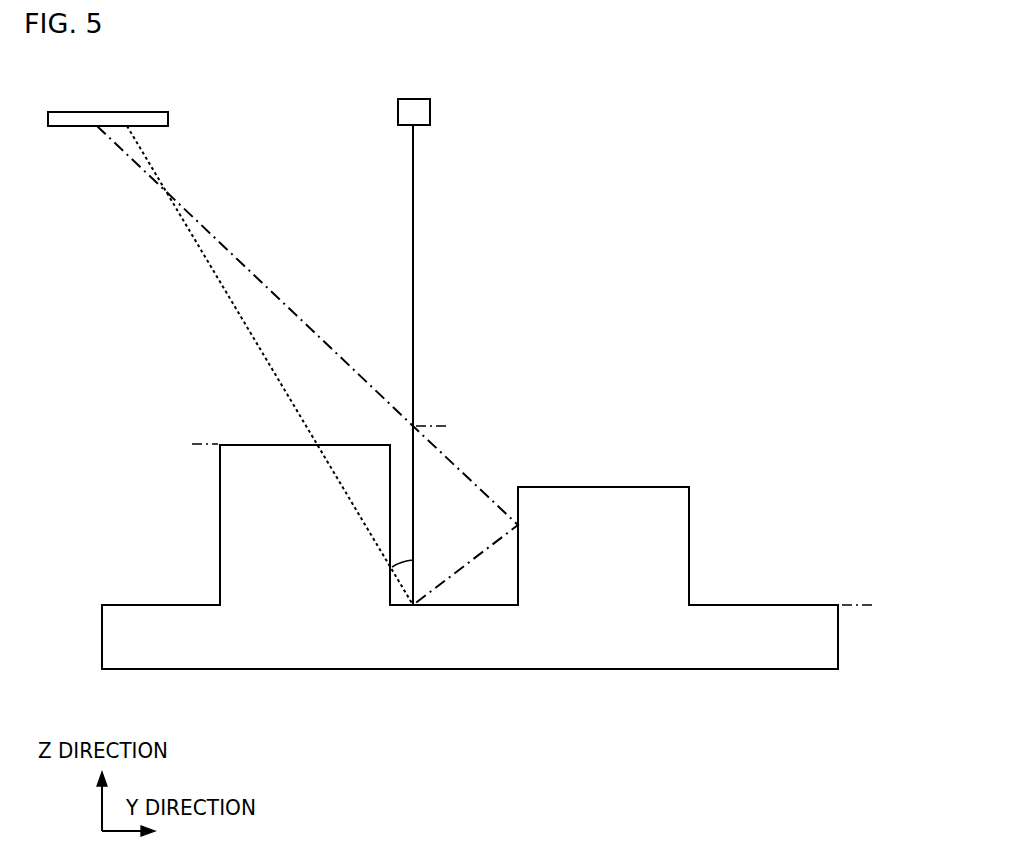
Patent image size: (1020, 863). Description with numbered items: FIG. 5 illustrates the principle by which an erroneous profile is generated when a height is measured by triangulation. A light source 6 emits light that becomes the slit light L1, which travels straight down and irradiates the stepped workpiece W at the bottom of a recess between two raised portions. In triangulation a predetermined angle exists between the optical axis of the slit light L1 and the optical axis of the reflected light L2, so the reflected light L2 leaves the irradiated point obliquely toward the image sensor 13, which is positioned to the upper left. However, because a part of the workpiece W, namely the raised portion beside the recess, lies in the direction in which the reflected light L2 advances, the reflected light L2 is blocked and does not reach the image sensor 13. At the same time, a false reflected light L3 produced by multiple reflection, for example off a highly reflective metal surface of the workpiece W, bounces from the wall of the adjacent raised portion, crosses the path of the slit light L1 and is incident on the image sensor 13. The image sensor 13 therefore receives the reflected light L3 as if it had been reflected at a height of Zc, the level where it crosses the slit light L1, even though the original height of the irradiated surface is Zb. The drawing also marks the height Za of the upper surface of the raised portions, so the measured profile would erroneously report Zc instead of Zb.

The image sensor 13 is at (168, 117).
The light source 6 is at (430, 108).
The slit light L1 is at (413, 170).
The reflected light L2 is at (237, 308).
The false reflected light L3 is at (253, 272).
The workpiece W is at (689, 545).
The height position of upper surface Za is at (187, 446).
The original height Zb is at (874, 608).
The apparent height Zc is at (450, 428).